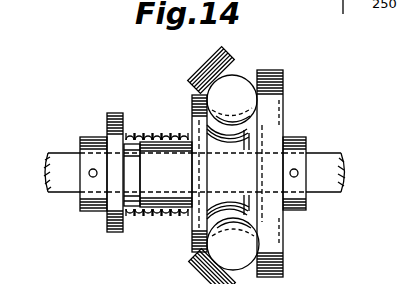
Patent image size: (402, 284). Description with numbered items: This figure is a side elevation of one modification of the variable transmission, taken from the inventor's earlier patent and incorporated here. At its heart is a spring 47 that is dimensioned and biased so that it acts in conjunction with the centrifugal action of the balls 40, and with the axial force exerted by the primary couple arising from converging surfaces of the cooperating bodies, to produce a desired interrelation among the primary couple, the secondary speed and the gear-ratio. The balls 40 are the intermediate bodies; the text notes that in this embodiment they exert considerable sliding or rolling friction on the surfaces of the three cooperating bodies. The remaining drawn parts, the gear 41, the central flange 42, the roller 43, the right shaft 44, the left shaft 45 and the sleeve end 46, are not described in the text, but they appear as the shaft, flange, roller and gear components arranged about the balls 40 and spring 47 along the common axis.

The balls 40 is at (244, 82).
The gear 41 is at (282, 94).
The center flange 42 is at (191, 103).
The roller 43 is at (199, 72).
The right shaft 44 is at (323, 155).
The left shaft 45 is at (61, 157).
The sleeve end 46 is at (133, 229).
The spring 47 is at (167, 219).